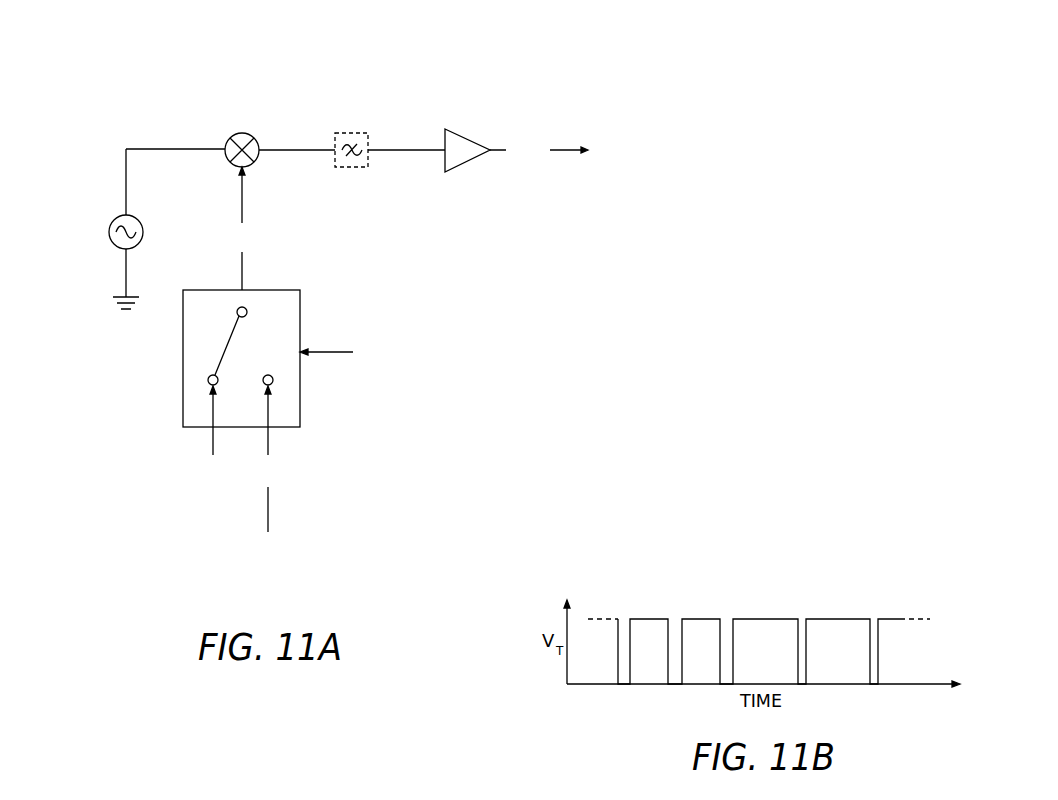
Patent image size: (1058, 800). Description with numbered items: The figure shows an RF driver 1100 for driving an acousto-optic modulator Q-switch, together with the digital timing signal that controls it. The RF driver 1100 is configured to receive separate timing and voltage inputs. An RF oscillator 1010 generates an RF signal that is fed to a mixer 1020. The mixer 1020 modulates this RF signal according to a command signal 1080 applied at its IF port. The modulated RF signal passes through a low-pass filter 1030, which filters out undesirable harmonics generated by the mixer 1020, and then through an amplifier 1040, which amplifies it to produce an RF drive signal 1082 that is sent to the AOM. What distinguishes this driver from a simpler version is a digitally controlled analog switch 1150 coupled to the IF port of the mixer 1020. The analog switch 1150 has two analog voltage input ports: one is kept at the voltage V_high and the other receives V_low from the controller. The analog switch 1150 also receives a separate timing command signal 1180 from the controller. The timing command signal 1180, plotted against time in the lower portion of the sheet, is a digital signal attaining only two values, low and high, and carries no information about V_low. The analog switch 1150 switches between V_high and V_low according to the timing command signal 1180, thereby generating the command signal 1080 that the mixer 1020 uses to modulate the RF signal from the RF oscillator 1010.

In FIG. 11A, the RF driver 1100 is at (125, 68).
In FIG. 11A, the RF oscillator 1010 is at (108, 232).
In FIG. 11A, the mixer 1020 is at (242, 132).
In FIG. 11A, the low-pass filter 1030 is at (350, 132).
In FIG. 11A, the amplifier 1040 is at (457, 130).
In FIG. 11A, the RF drive signal 1082 is at (579, 151).
In FIG. 11A, the command signal 1080 is at (240, 228).
In FIG. 11A, the digitally controlled analog switch 1150 is at (183, 364).
In FIG. 11A, the timing command signal 1180 is at (420, 352).
In FIG. 11B, the timing command signal 1180 is at (700, 618).